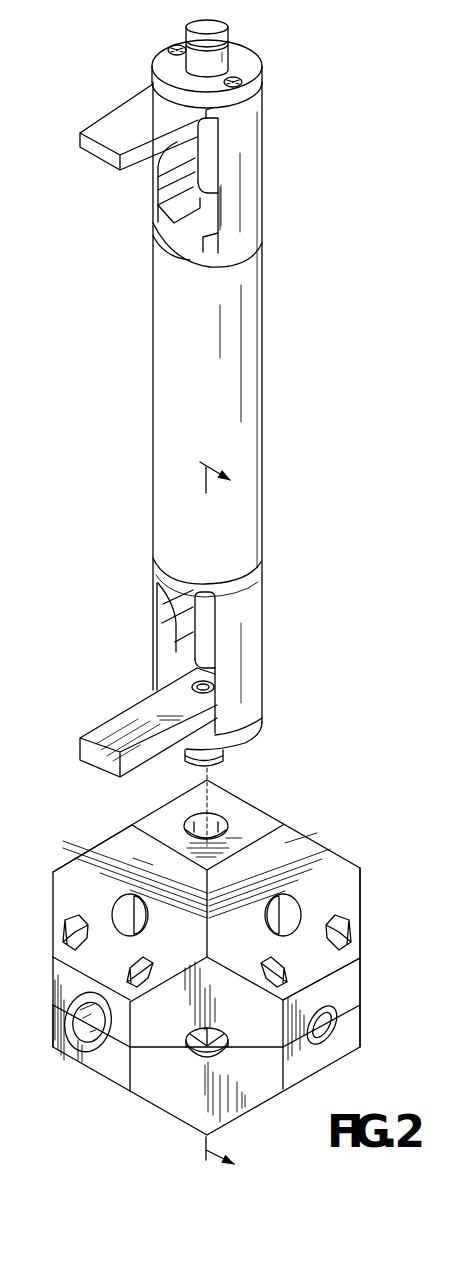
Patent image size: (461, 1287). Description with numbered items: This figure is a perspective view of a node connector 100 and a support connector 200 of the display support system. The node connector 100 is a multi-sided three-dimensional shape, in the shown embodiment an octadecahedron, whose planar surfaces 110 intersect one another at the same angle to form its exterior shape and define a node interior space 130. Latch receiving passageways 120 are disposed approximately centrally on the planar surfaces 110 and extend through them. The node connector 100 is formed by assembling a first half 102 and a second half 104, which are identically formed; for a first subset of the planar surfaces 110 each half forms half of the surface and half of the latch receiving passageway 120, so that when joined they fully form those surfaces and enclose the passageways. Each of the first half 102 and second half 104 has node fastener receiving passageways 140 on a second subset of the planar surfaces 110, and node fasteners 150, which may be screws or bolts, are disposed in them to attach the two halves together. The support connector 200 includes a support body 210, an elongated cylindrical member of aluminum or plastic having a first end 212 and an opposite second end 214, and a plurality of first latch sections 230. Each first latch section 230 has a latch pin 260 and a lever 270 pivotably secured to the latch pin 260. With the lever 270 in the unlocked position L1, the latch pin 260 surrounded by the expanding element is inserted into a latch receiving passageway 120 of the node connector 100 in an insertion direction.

The node connector 100 is at (376, 838).
The first half 102 is at (118, 848).
The second half 104 is at (55, 1048).
The planar surfaces 110 is at (260, 825).
The latch receiving passageways 120 is at (228, 818).
The node interior space 130 is at (217, 824).
The node fastener receiving passageways 140 is at (143, 967).
The node fasteners 150 is at (350, 935).
The support connector 200 is at (279, 319).
The support body 210 is at (243, 422).
The first end 212 is at (262, 583).
The second end 214 is at (252, 246).
The first latch section 230 is at (264, 132).
The latch pin 260 is at (188, 768).
The lever 270 is at (137, 693).
The unlocked position L1 is at (102, 712).